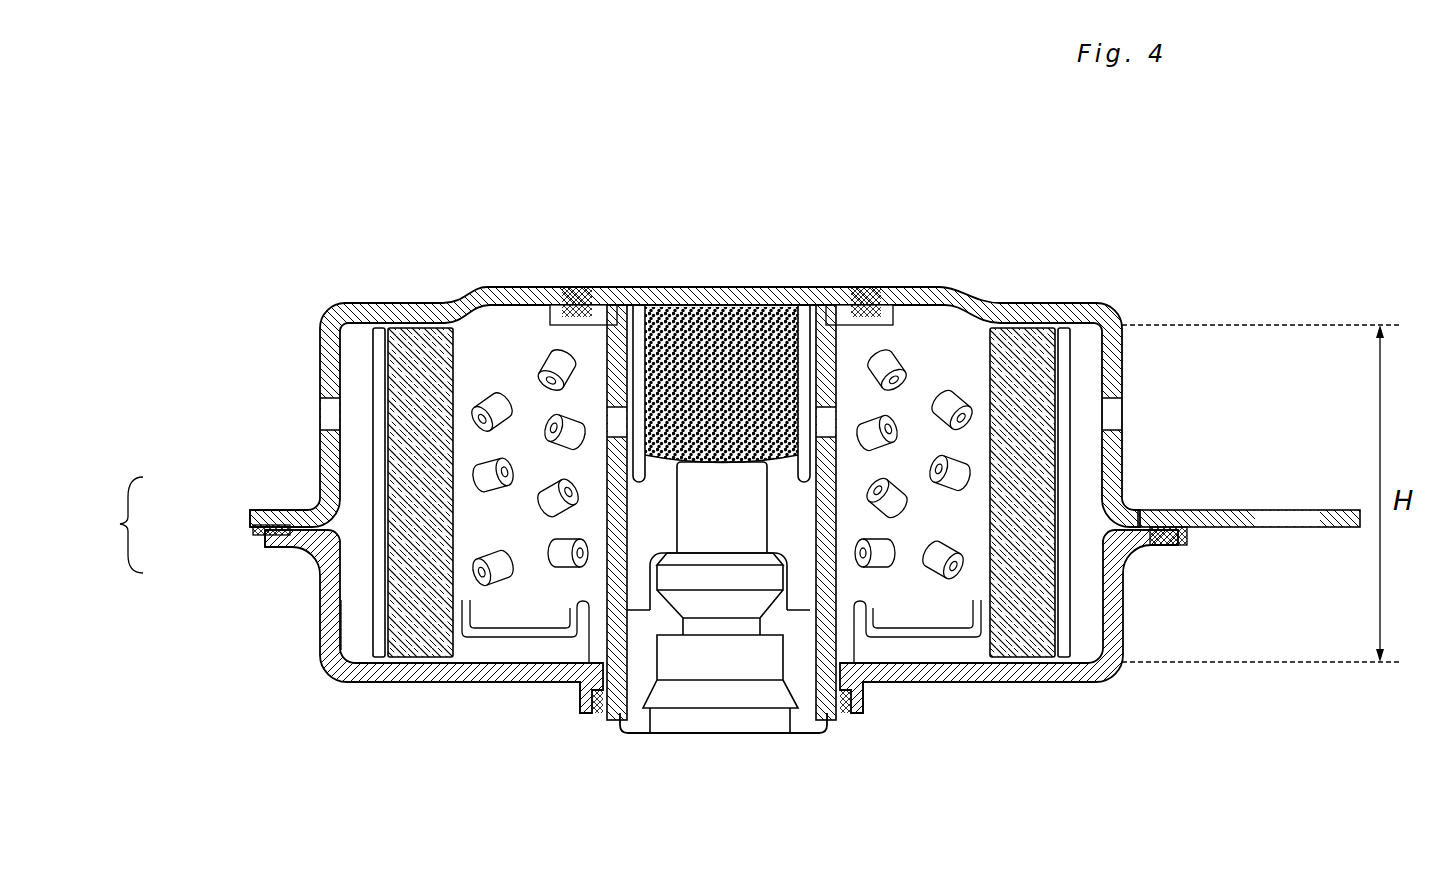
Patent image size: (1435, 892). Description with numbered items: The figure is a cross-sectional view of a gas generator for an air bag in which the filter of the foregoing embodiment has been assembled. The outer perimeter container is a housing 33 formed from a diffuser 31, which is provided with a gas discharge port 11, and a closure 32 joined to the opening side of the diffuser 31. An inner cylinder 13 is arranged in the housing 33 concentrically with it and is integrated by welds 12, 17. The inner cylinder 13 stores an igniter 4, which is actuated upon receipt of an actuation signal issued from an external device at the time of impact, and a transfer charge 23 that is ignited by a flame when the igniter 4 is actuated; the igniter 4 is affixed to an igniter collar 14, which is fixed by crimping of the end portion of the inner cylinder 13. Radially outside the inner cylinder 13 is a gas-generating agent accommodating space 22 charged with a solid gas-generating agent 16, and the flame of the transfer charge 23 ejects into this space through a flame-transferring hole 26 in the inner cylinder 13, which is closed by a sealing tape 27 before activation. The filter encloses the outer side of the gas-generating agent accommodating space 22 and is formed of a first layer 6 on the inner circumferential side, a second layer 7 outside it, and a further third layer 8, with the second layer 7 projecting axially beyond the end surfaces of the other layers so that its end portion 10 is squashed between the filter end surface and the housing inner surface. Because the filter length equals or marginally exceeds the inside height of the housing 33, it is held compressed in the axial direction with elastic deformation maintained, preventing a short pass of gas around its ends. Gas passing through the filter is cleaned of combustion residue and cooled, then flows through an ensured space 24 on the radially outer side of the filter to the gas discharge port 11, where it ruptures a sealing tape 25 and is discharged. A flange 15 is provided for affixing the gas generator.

The igniter 4 is at (728, 520).
The first layer 6 is at (433, 640).
The second layer 7 is at (375, 468).
The third layer 8 is at (337, 673).
The end portion 10 is at (400, 682).
The gas discharge port 11 is at (328, 415).
The weld 12 is at (866, 683).
The inner cylinder 13 is at (838, 565).
The igniter collar 14 is at (633, 707).
The flange 15 is at (1230, 510).
The gas-generating agent 16 is at (965, 405).
The weld 17 is at (1182, 540).
The gas-generating agent accommodating space 22 is at (512, 336).
The transfer charge 23 is at (762, 340).
The space 24 is at (355, 630).
The sealing tape 25 is at (325, 347).
The flame-transferring hole 26 is at (634, 405).
The sealing tape 27 is at (840, 420).
The diffuser 31 is at (320, 485).
The closure 32 is at (323, 583).
The housing 33 is at (109, 525).